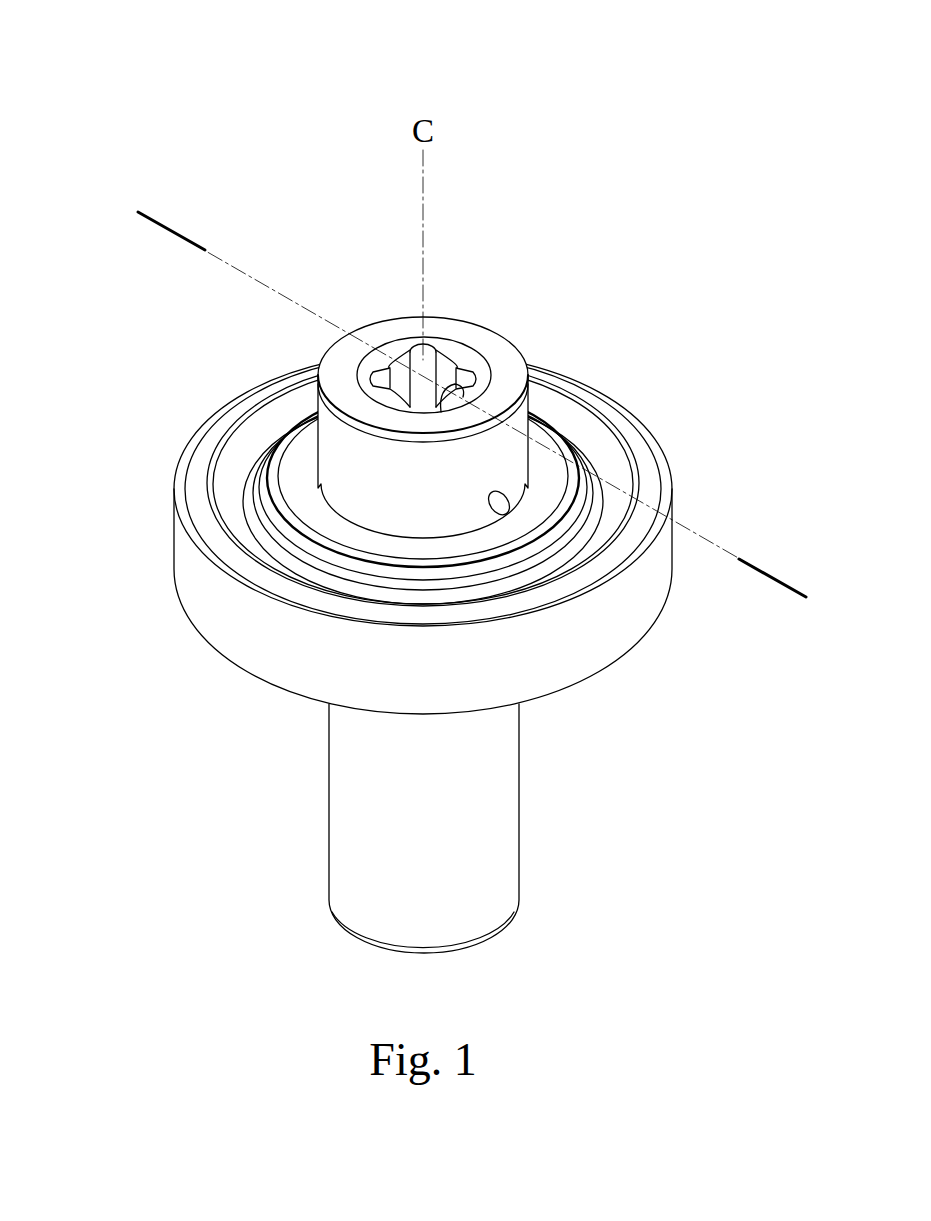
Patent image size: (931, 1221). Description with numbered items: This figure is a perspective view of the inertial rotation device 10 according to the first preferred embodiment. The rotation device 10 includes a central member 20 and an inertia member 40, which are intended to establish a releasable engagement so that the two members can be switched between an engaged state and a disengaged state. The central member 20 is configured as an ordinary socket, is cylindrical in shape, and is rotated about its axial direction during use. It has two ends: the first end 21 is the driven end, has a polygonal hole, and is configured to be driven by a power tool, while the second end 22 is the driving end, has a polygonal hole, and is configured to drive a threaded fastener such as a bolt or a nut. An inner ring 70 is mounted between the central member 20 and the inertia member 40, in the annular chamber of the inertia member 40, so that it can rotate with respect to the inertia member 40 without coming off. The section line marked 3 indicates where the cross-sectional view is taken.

The inertial rotation device 10 is at (285, 185).
The central member 20 is at (432, 850).
The first end 21 is at (477, 333).
The second end 22 is at (343, 862).
The inertia member 40 is at (193, 437).
The inner ring 70 is at (545, 438).
The section line 3- 3 is at (172, 227).